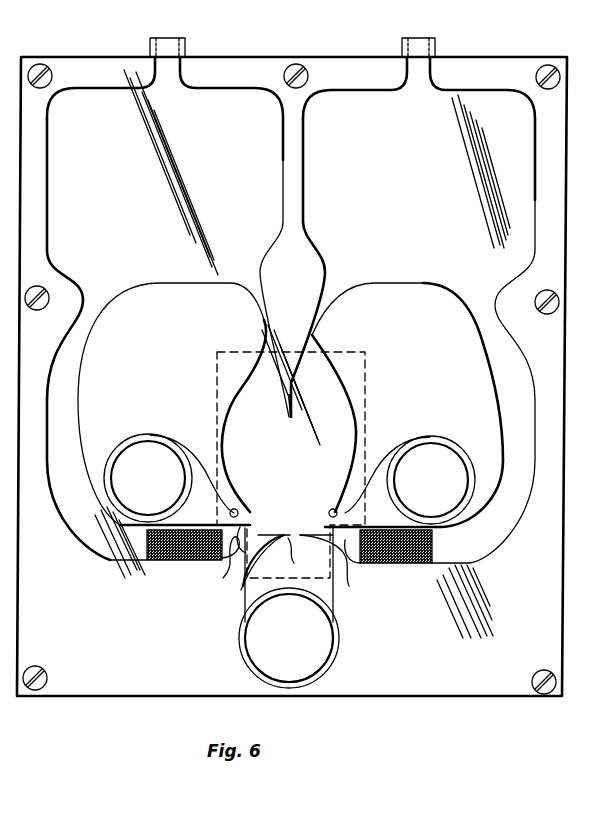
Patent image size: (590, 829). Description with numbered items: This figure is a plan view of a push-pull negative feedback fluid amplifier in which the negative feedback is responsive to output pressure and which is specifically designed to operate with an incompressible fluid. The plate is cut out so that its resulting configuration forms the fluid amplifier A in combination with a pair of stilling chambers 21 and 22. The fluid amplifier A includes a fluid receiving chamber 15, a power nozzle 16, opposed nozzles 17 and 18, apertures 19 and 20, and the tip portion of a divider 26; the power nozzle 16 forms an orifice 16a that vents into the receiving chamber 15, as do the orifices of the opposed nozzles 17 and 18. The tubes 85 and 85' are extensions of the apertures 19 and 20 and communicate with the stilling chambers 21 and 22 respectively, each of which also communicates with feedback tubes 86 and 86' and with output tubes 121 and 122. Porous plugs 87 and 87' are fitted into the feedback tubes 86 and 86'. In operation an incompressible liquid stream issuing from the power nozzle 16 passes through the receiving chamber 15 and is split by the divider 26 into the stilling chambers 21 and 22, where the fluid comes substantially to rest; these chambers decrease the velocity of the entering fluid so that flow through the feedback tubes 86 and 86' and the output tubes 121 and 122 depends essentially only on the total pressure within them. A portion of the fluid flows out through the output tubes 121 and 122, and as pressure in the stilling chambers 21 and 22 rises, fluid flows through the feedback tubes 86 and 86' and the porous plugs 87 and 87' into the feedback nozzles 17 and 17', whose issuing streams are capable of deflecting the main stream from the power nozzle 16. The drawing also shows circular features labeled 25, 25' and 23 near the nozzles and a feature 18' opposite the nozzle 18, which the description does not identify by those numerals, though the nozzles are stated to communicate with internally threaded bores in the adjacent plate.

The output tube 122 is at (183, 65).
The output tube 121 is at (430, 67).
The stilling chamber 22 is at (120, 199).
The stilling chamber 21 is at (393, 189).
The tube 85' is at (283, 288).
The tube 85 is at (331, 319).
The divider 26 is at (293, 400).
The aperture 20 is at (262, 372).
The aperture 19 is at (318, 368).
The feedback tube 86' is at (171, 404).
The feedback tube 86 is at (495, 381).
The fluid receiving chamber 15 is at (304, 496).
The fluid amplifier A is at (367, 397).
The roller 25' is at (163, 465).
The roller 25 is at (415, 466).
The pivot 18' is at (253, 489).
The opposed nozzle 18 is at (325, 489).
The power nozzle 16 is at (245, 584).
The orifice 16a is at (308, 558).
The feedback nozzle 17 is at (336, 569).
The feedback nozzle 17' is at (220, 562).
The porous plug 87' is at (184, 569).
The porous plug 87 is at (408, 566).
The outlet 23 is at (332, 643).